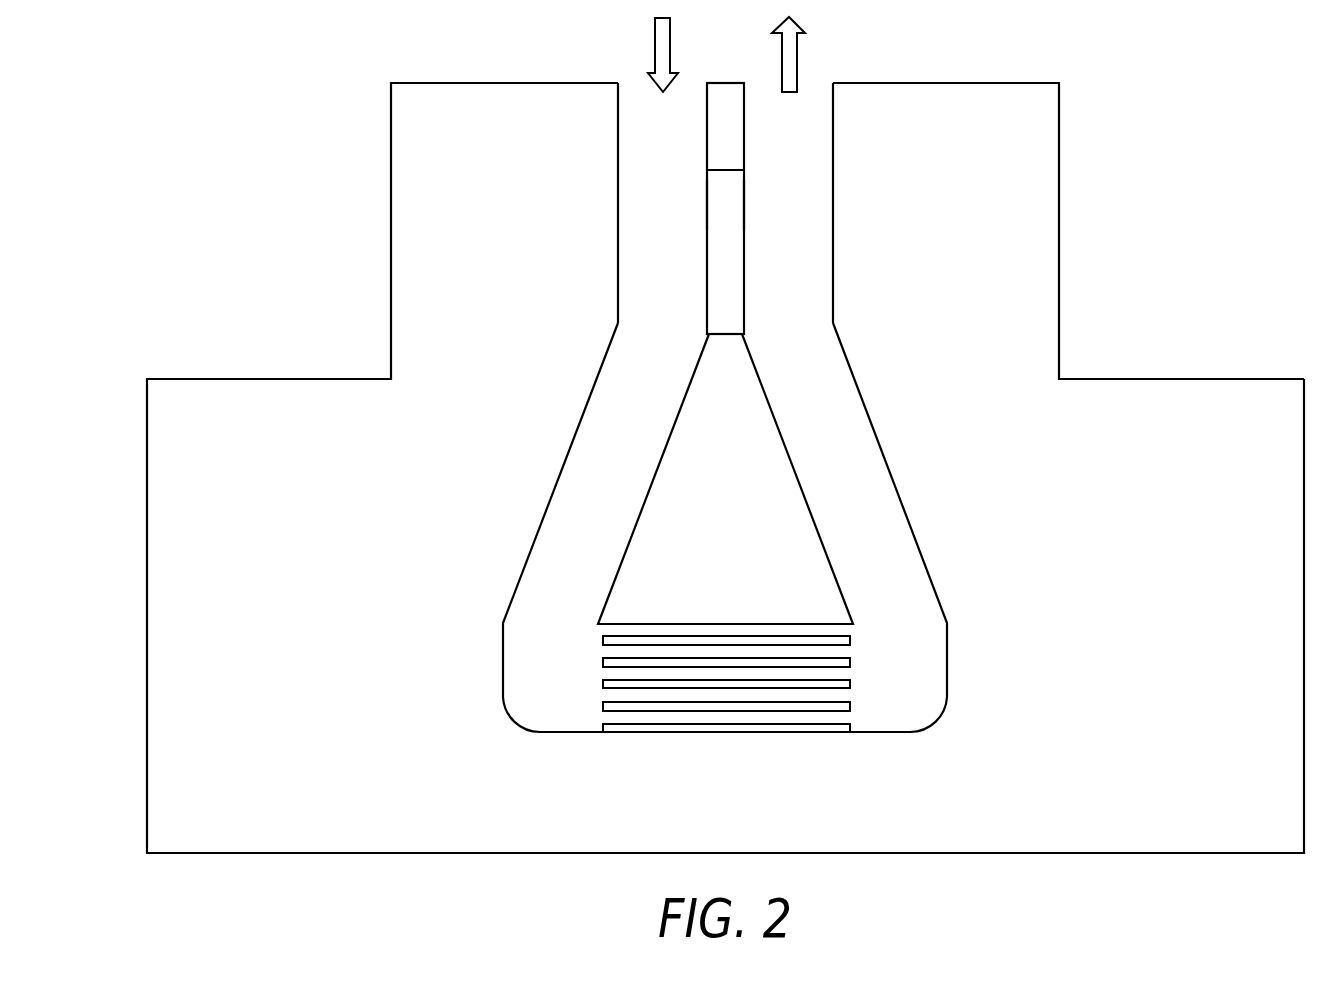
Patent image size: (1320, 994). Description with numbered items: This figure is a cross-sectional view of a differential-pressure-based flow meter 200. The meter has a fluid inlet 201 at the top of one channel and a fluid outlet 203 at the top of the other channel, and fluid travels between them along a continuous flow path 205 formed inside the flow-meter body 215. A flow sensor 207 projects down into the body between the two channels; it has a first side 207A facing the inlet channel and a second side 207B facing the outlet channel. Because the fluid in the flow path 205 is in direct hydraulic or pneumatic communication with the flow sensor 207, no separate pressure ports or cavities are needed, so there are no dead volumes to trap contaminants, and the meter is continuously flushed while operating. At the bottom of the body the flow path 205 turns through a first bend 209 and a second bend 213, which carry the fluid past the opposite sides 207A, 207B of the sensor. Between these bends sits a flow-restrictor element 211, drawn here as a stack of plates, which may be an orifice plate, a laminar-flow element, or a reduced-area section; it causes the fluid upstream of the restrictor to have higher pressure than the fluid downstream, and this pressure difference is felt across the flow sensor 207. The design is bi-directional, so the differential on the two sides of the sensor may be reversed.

The differential-pressure-based flow meter 200 is at (172, 78).
The fluid inlet 201 is at (655, 36).
The fluid outlet 203 is at (797, 60).
The flow path 205 is at (633, 135).
The flow sensor 207 is at (706, 305).
The first side 207A is at (705, 200).
The second side 207B is at (745, 200).
The first bend 209 is at (527, 703).
The flow-restrictor element 211 is at (600, 708).
The second bend 213 is at (922, 702).
The flow-meter body 215 is at (958, 102).